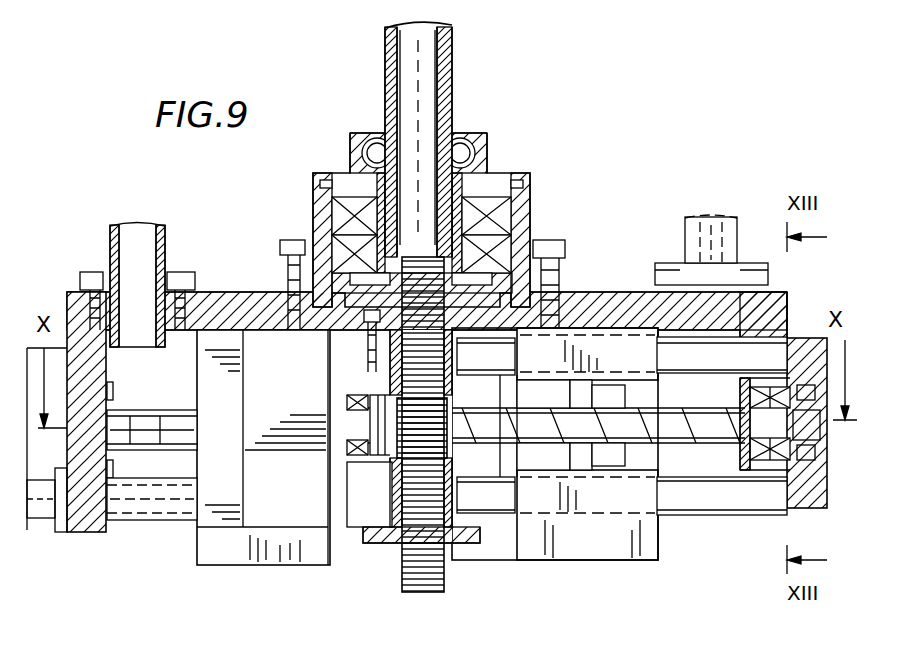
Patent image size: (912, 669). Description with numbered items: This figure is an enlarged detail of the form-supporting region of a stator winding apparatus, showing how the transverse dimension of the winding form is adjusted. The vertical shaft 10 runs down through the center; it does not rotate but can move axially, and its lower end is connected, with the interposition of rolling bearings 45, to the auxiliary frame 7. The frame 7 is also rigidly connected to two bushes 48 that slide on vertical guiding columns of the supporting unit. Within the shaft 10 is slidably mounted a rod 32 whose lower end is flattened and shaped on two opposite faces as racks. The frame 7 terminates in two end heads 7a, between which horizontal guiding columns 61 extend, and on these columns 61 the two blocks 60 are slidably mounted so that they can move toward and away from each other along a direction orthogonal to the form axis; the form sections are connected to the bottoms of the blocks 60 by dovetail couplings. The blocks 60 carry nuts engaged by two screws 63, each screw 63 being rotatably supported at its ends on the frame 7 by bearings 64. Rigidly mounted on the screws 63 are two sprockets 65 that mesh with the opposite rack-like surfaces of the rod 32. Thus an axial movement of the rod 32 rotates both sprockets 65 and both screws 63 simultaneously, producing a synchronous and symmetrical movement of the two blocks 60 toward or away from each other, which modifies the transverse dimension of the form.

The auxiliary frame 7 is at (601, 283).
The end heads 7a is at (78, 310).
The shaft 10 is at (447, 92).
The rod 32 is at (428, 593).
The rolling bearings 45 is at (340, 275).
The bushes 48 is at (112, 248).
The blocks 60 is at (222, 520).
The guiding columns 61 is at (145, 498).
The screws 63 is at (140, 410).
The bearings 64 is at (350, 448).
The sprockets 65 is at (413, 412).